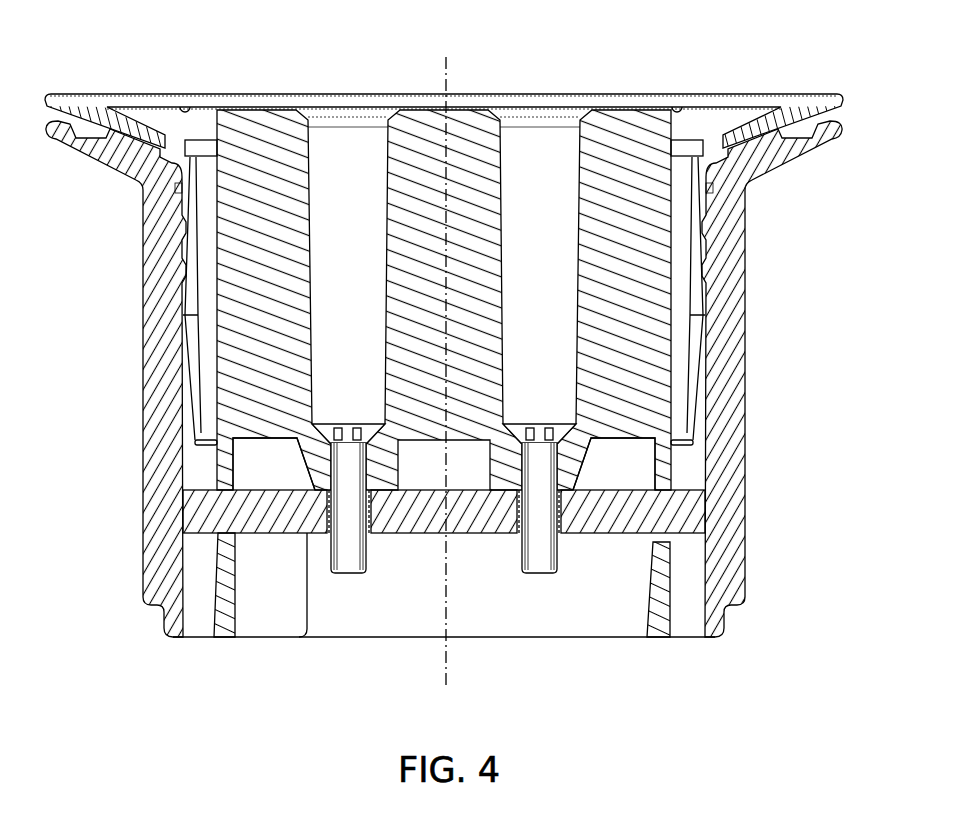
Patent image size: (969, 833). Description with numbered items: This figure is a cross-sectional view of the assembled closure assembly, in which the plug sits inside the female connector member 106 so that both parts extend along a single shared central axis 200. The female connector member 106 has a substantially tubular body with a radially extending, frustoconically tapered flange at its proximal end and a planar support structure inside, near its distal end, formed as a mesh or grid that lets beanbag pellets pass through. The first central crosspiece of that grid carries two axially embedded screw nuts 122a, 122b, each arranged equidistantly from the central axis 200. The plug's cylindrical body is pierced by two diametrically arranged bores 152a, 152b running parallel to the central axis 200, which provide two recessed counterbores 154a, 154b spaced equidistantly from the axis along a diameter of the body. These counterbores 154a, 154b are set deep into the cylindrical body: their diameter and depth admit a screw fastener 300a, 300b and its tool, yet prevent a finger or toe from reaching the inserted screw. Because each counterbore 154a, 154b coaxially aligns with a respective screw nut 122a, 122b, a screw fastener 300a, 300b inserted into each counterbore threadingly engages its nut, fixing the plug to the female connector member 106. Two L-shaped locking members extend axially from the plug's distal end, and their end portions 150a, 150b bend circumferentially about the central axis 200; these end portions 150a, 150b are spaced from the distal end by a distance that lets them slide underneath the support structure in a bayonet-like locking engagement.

The female connector member 106 is at (730, 296).
The bore 152a is at (348, 143).
The bore 152b is at (552, 140).
The recessed counterbore 154a is at (307, 458).
The recessed counterbore 154b is at (573, 462).
The axially embedded screw nut 122a is at (327, 512).
The axially embedded screw nut 122b is at (560, 512).
The screw fastener 300a is at (345, 557).
The screw fastener 300b is at (540, 563).
The end portion of L-shaped locking member 150a is at (227, 590).
The end portion of L-shaped locking member 150b is at (663, 602).
The central axis 200 is at (447, 58).